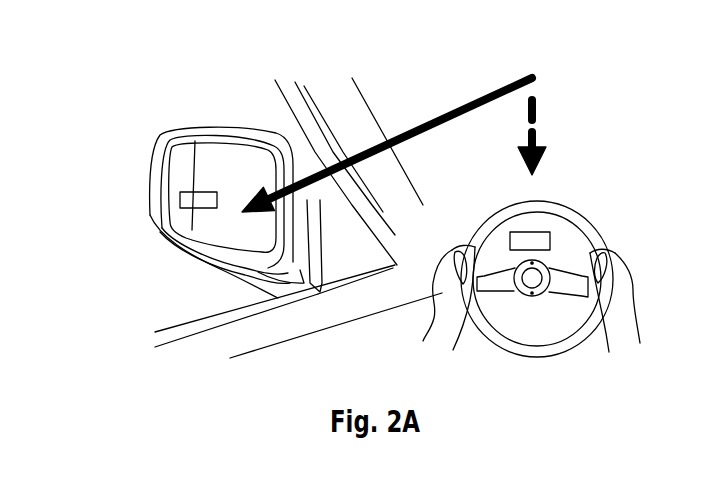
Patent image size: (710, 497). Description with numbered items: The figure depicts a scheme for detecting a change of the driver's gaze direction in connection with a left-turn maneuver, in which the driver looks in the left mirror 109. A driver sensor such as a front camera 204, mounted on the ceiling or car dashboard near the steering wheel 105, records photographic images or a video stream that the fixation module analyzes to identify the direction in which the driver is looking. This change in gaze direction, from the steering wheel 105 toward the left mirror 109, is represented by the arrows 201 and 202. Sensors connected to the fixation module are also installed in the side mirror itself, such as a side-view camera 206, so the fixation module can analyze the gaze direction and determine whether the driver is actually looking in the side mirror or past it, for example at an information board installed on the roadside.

The left mirror 109 is at (202, 126).
The side-view camera 206 is at (180, 201).
The arrow 202 is at (466, 100).
The arrow 201 is at (537, 108).
The steering wheel 105 is at (557, 204).
The front camera 204 is at (550, 238).